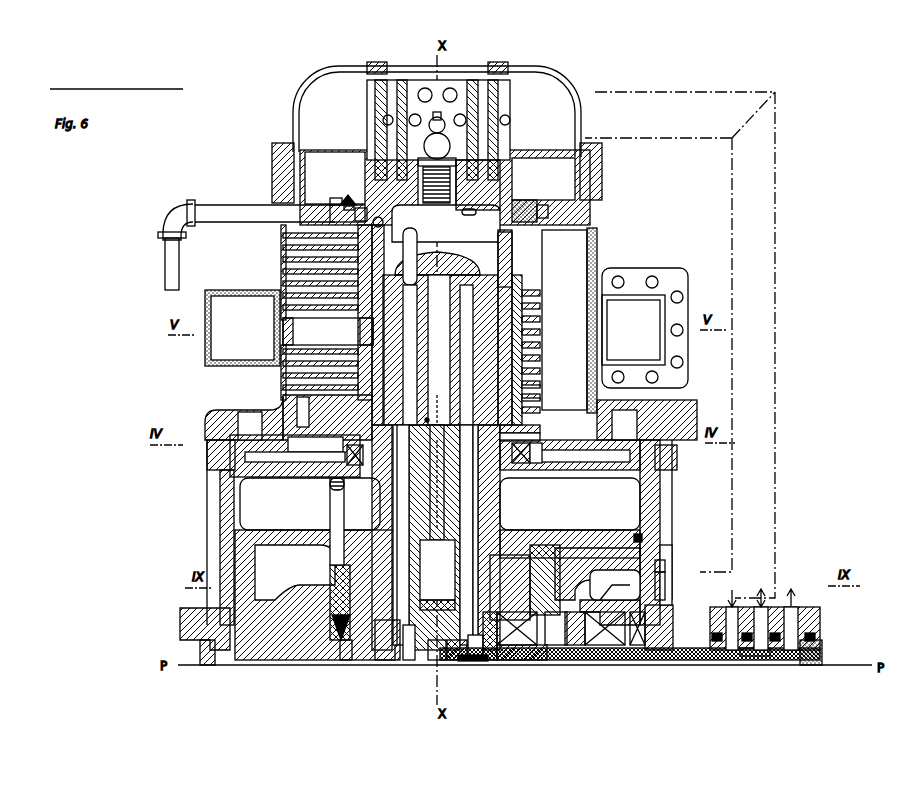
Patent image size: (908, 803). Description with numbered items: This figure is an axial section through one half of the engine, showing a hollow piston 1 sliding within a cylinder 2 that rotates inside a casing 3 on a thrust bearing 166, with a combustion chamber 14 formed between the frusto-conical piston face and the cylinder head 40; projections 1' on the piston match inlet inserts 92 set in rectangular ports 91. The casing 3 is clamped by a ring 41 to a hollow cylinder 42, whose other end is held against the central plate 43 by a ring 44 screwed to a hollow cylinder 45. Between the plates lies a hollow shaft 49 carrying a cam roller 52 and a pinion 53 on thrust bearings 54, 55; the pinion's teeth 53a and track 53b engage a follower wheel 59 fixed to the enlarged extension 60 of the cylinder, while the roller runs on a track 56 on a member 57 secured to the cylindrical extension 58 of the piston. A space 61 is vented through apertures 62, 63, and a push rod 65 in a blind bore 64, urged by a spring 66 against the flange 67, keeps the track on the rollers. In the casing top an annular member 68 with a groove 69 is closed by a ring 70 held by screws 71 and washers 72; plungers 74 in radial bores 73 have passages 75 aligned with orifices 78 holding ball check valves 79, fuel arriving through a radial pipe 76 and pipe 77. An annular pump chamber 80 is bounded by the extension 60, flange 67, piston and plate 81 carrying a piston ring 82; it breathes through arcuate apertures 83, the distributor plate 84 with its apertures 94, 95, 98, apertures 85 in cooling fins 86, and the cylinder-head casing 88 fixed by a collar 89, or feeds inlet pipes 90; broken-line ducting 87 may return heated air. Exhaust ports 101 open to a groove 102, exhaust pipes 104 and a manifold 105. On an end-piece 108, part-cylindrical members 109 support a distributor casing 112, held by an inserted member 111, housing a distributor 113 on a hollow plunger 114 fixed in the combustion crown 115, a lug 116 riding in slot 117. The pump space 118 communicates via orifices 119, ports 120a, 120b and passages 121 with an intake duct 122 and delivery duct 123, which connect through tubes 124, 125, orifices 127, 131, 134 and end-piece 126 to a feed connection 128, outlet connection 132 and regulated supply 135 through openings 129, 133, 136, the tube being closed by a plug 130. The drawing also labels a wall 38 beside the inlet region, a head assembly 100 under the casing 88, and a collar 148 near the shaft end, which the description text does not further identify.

The hollow piston 1 is at (543, 384).
The projections 1' is at (499, 330).
The cylinder 2 is at (540, 345).
The casing 3 is at (283, 398).
The combustion chamber 14 is at (446, 223).
The casing wall 38 is at (597, 226).
The cylinder head 40 is at (505, 166).
The ring 41 is at (207, 420).
The hollow cylinder 42 is at (220, 488).
The central plate 43 is at (262, 662).
The ring 44 is at (190, 612).
The hollow cylinder 45 is at (200, 654).
The hollow shaft 49 is at (662, 660).
The cam roller 52 is at (572, 662).
The pinion 53 is at (632, 660).
The teeth 53a is at (618, 584).
The track 53b is at (614, 584).
The thrust bearing 54 is at (545, 662).
The thrust bearing 55 is at (600, 660).
The track 56 is at (346, 662).
The member 57 is at (336, 582).
The cylindrical extension 58 is at (515, 560).
The follower wheel 59 is at (597, 573).
The extension 60 is at (660, 490).
The space 61 is at (665, 560).
The aperture 62 is at (665, 564).
The aperture 63 is at (665, 580).
The blind longitudinal bore 64 is at (333, 662).
The push rod 65 is at (330, 506).
The spring 66 is at (330, 487).
The plate or flange 67 is at (295, 470).
The annular member 68 is at (365, 170).
The groove 69 is at (535, 202).
The ring 70 is at (546, 205).
The screw 71 is at (351, 204).
The washer 72 is at (346, 200).
The radial bore 73 is at (372, 240).
The plunger 74 is at (332, 207).
The axial passage 75 is at (330, 217).
The radial pipe 76 is at (232, 214).
The pipe 77 is at (156, 254).
The orifice 78 is at (384, 218).
The ball check valve 79 is at (378, 228).
The pump chamber 80 is at (440, 504).
The plate or flange 81 is at (605, 535).
The piston ring 82 is at (642, 538).
The arcuate aperture 83 is at (570, 457).
The distributor plate 84 is at (660, 428).
The aperture 85 is at (283, 238).
The cooling fin 86 is at (283, 259).
The ducting 87 is at (775, 252).
The cylinder-head casing 88 is at (581, 112).
The collar 89 is at (602, 153).
The inlet pipe 90 is at (587, 295).
The rectangular port 91 is at (417, 236).
The inlet insert 92 is at (512, 260).
The wide aperture 94 is at (262, 463).
The aperture of intermediate width 95 is at (677, 458).
The wide aperture 98 is at (295, 456).
The valve block 100 is at (480, 102).
The exhaust port 101 is at (439, 350).
The internal annular groove 102 is at (372, 327).
The exhaust pipe 104 is at (328, 331).
The exhaust manifold 105 is at (222, 292).
The end-piece 108 is at (388, 662).
The part-cylindrical member 109 is at (497, 662).
The inserted member 111 is at (532, 662).
The distributor casing 112 is at (410, 662).
The distributor 113 is at (415, 590).
The hollow plunger 114 is at (478, 510).
The combustion crown 115 is at (455, 268).
The lug 116 is at (540, 436).
The slot 117 is at (395, 486).
The space 118 is at (437, 570).
The orifice 119 is at (408, 578).
The port 120a is at (535, 388).
The port 120b is at (535, 402).
The passage 121 is at (540, 421).
The intake duct 122 is at (473, 484).
The delivery duct 123 is at (400, 503).
The tube 124 is at (745, 660).
The tube 125 is at (690, 662).
The external end-piece 126 is at (820, 628).
The orifice 127 is at (478, 660).
The liquid feed connection 128 is at (733, 589).
The opening 129 is at (732, 655).
The plug 130 is at (822, 657).
The opening 131 is at (437, 662).
The outlet connection 132 is at (793, 589).
The opening 133 is at (790, 660).
The orifice 134 is at (473, 664).
The supply 135 is at (763, 589).
The opening 136 is at (762, 660).
The collar 148 is at (456, 662).
The thrust bearing 166 is at (542, 452).